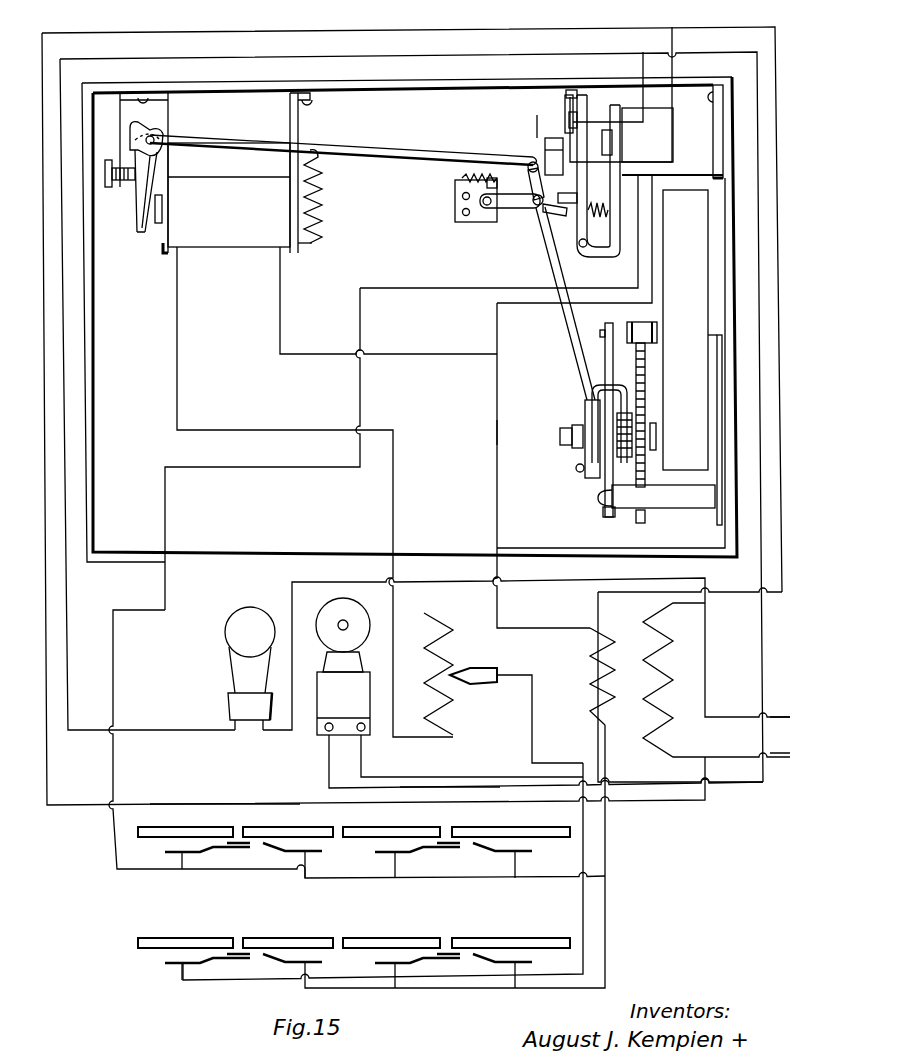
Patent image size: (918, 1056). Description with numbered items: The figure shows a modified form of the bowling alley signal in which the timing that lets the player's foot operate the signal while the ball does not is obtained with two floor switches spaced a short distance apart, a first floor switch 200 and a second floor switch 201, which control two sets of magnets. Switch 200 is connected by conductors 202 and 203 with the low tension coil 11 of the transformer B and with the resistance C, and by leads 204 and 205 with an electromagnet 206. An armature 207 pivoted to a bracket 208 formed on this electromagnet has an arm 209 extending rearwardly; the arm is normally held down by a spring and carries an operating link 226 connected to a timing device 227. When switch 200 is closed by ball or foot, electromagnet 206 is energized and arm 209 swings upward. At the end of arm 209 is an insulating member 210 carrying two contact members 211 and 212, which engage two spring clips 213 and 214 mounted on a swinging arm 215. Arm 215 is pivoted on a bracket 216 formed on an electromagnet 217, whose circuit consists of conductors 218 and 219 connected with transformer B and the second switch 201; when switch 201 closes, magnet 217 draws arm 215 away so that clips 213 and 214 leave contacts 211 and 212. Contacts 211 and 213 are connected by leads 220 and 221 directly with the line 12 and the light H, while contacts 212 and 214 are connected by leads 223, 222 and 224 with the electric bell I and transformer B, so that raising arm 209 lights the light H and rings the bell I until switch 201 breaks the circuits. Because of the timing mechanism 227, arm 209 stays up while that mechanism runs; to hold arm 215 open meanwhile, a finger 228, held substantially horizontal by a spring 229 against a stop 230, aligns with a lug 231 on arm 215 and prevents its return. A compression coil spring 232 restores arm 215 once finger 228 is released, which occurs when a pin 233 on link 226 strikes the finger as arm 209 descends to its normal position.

The first floor switch 200 is at (342, 962).
The second floor switch 201 is at (340, 852).
The conductor 202 is at (583, 905).
The conductor 203 is at (608, 920).
The lead 204 is at (392, 478).
The lead 205 is at (497, 431).
The electromagnet 206 is at (242, 213).
The armature 207 is at (137, 230).
The bracket 208 is at (143, 117).
The arm 209 is at (383, 153).
The insulating member 210 is at (553, 140).
The contact member 211 is at (553, 150).
The contact member 212 is at (560, 168).
The spring clip 213 is at (578, 105).
The spring clip 214 is at (572, 128).
The swinging arm 215 is at (580, 145).
The bracket 216 is at (602, 250).
The electromagnet 217 is at (685, 120).
The conductor 218 is at (495, 332).
The conductor 219 is at (361, 327).
The lead 220 is at (218, 805).
The lead 221 is at (190, 730).
The lead 222 is at (757, 258).
The lead 223 is at (778, 368).
The lead 224 is at (480, 755).
The operating link 226 is at (568, 348).
The timing device 227 is at (650, 373).
The finger 228 is at (512, 215).
The spring 229 is at (466, 177).
The stop 230 is at (458, 197).
The lug 231 is at (570, 198).
The compression coil spring 232 is at (592, 240).
The pin 233 is at (537, 207).
The light H is at (243, 647).
The electric bell I is at (326, 705).
The resistance C is at (442, 675).
The low tension coil 11 is at (590, 663).
The transformer B is at (633, 673).
The line 12 is at (722, 752).